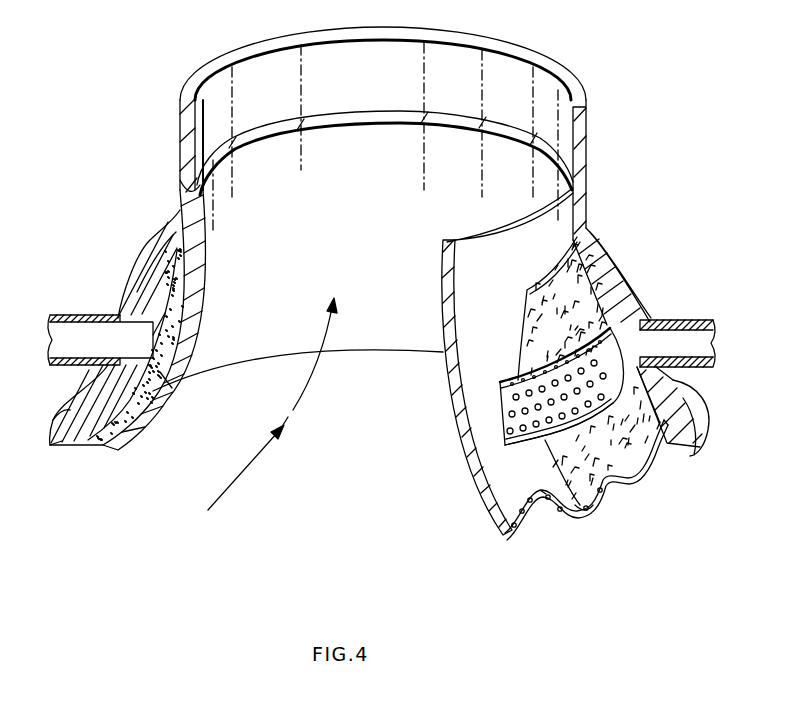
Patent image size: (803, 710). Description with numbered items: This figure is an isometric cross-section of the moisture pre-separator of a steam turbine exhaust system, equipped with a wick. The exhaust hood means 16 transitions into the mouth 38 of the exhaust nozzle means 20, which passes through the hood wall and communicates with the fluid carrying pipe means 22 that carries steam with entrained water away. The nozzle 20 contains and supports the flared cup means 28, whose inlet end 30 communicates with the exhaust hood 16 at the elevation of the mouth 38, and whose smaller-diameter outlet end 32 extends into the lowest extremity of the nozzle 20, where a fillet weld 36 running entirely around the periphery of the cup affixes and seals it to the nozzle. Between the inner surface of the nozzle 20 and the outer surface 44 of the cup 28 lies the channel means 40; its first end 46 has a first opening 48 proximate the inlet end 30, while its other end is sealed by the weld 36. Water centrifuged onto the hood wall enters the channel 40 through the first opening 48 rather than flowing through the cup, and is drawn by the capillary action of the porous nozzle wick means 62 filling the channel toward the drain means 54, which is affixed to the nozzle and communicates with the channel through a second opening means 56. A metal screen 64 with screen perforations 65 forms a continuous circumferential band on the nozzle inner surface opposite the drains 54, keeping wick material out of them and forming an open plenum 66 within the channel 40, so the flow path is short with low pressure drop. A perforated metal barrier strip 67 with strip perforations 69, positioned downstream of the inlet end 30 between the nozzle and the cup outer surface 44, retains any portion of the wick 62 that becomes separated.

The exhaust hood means 16 is at (697, 444).
The exhaust nozzle means 20 is at (598, 246).
The fluid carrying pipe means 22 is at (583, 131).
The cup means 28 is at (467, 386).
The inlet end 30 is at (342, 473).
The outlet end 32 is at (483, 150).
The fillet weld 36 is at (186, 192).
The mouth 38 is at (685, 452).
The channel means 40 is at (115, 440).
The outer surface 44 is at (150, 378).
The first end 46 is at (137, 396).
The first opening 48 is at (104, 447).
The drain means 54 is at (673, 320).
The second opening means 56 is at (95, 335).
The nozzle wick means 62 is at (584, 510).
The metal screen 64 is at (512, 449).
The screen perforations 65 is at (520, 376).
The plenum 66 is at (618, 327).
The perforated metal barrier strip 67 is at (548, 500).
The strip perforations 69 is at (510, 531).